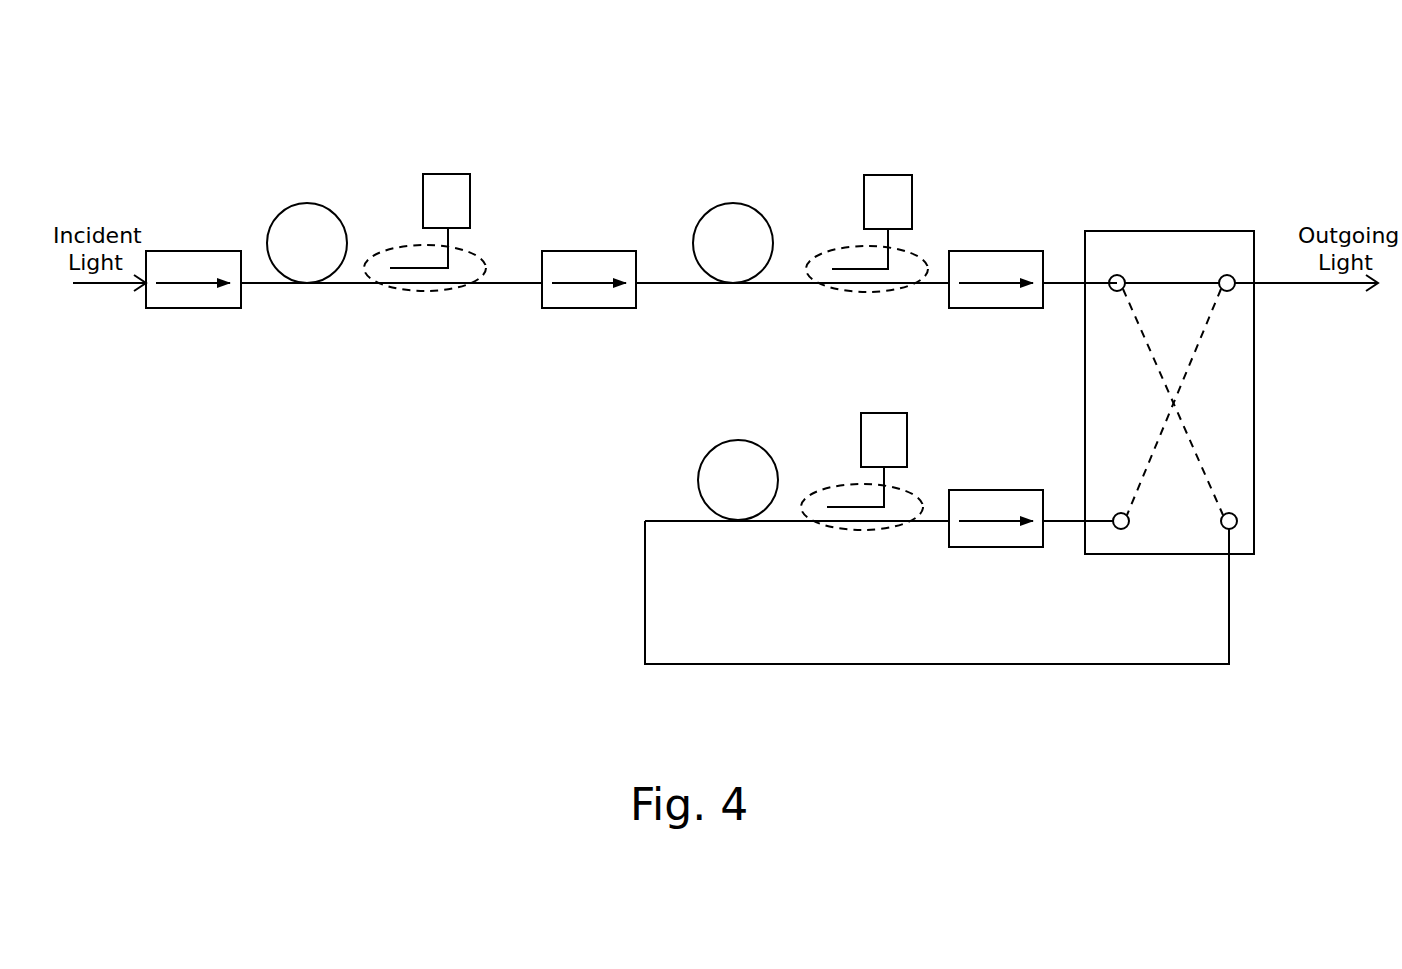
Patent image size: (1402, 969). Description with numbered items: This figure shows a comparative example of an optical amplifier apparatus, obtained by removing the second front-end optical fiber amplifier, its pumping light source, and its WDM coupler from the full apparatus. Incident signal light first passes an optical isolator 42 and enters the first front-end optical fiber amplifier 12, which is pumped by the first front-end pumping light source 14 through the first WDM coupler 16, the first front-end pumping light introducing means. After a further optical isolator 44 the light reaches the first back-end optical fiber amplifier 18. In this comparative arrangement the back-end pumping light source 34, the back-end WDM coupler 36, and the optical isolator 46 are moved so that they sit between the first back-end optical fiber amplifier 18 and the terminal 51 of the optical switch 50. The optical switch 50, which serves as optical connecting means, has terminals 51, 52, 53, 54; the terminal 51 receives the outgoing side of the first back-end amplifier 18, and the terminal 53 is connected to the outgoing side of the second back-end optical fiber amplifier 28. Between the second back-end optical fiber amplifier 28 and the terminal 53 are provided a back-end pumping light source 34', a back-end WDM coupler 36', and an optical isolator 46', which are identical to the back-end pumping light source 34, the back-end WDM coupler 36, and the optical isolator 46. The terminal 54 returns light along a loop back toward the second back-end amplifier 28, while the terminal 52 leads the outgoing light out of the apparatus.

The first front-end optical fiber amplifier 12 is at (317, 203).
The first front-end pumping light source 14 is at (448, 174).
The first WDM coupler 16 is at (478, 256).
The first back-end optical fiber amplifier 18 is at (735, 203).
The second back-end optical fiber amplifier 28 is at (698, 480).
The back-end pumping light source 34 is at (891, 184).
The back-end pumping light source 34' is at (889, 422).
The back-end WDM coupler 36 is at (865, 229).
The back-end WDM coupler 36' is at (860, 467).
The optical isolator 42 is at (195, 251).
The optical isolator 44 is at (590, 251).
The optical isolator 46 is at (1004, 242).
The optical isolator 46' is at (1006, 480).
The optical switch 50 is at (1254, 404).
The terminal 51 is at (1119, 275).
The terminal 52 is at (1229, 275).
The terminal 53 is at (1119, 529).
The terminal 54 is at (1227, 529).